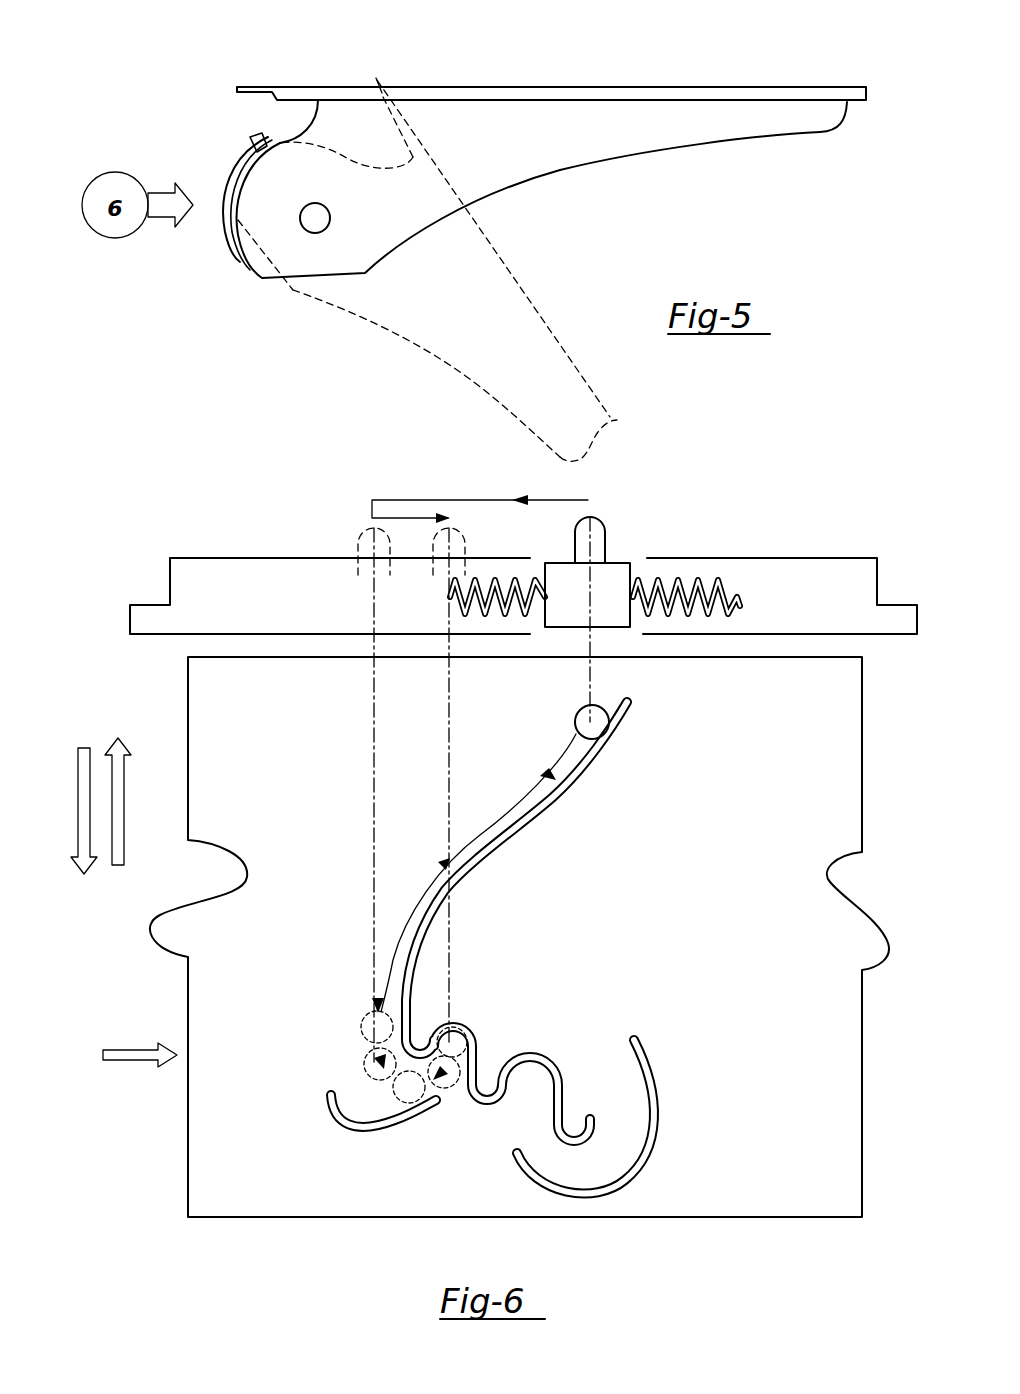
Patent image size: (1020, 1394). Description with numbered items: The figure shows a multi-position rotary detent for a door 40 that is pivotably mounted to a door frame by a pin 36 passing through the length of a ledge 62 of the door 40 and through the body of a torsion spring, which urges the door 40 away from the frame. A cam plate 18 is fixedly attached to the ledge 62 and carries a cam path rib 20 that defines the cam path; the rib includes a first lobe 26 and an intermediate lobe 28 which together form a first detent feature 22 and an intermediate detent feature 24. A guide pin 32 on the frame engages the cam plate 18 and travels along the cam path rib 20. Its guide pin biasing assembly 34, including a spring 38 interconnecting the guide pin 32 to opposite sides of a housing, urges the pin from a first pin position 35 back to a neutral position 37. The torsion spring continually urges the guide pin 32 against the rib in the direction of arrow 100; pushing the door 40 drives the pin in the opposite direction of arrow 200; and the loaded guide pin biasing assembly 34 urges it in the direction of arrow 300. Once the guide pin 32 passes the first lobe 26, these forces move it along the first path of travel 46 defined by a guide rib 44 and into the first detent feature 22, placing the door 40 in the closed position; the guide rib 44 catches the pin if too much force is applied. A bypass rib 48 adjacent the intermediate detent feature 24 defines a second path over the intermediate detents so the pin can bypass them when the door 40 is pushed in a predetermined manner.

In FIG. 5, the cam plate 18 is at (252, 268).
In FIG. 6, the cam path rib 20 is at (517, 820).
In FIG. 6, the first detent feature 22 is at (458, 1030).
In FIG. 6, the intermediate detent feature 24 is at (541, 1062).
In FIG. 6, the first lobe 26 is at (400, 1092).
In FIG. 6, the intermediate lobe 28 is at (494, 1108).
In FIG. 5, the guide pin 32 is at (256, 138).
In FIG. 6, the guide pin 32 is at (437, 533).
In FIG. 6, the guide pin biasing assembly 34 is at (682, 580).
In FIG. 6, the first pin position 35 is at (452, 547).
In FIG. 5, the pin 36 is at (331, 206).
In FIG. 6, the neutral position 37 is at (373, 735).
In FIG. 6, the spring 38 is at (498, 580).
In FIG. 5, the door 40 is at (607, 87).
In FIG. 6, the guide rib 44 is at (360, 1123).
In FIG. 6, the first path of travel 46 is at (395, 1098).
In FIG. 6, the bypass rib 48 is at (645, 1155).
In FIG. 6, the ledge 62 is at (690, 895).
In FIG. 6, the arrow 100 is at (82, 797).
In FIG. 6, the arrow 200 is at (120, 815).
In FIG. 6, the arrow 300 is at (123, 1056).